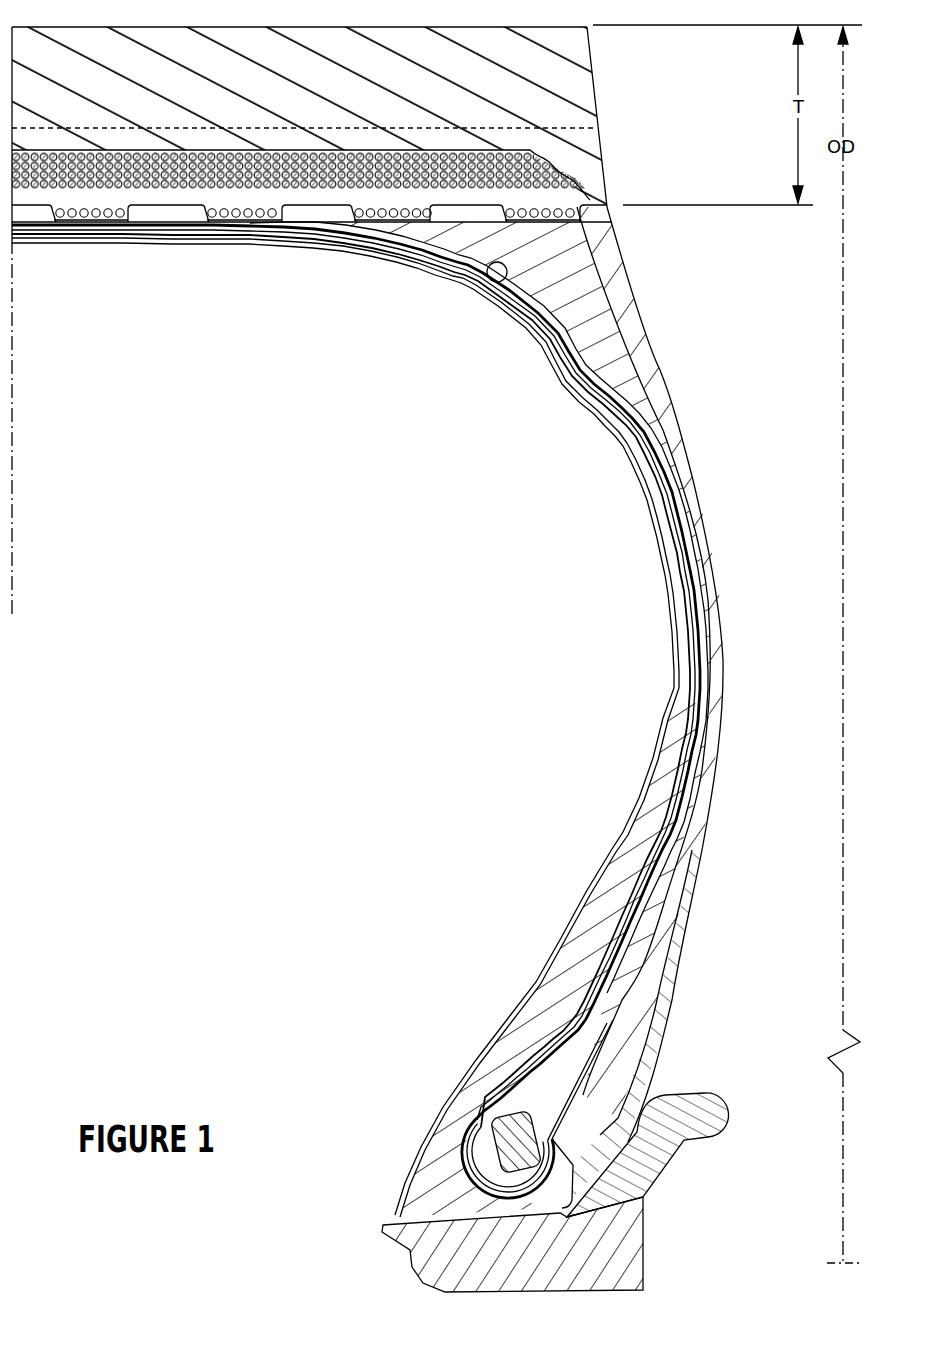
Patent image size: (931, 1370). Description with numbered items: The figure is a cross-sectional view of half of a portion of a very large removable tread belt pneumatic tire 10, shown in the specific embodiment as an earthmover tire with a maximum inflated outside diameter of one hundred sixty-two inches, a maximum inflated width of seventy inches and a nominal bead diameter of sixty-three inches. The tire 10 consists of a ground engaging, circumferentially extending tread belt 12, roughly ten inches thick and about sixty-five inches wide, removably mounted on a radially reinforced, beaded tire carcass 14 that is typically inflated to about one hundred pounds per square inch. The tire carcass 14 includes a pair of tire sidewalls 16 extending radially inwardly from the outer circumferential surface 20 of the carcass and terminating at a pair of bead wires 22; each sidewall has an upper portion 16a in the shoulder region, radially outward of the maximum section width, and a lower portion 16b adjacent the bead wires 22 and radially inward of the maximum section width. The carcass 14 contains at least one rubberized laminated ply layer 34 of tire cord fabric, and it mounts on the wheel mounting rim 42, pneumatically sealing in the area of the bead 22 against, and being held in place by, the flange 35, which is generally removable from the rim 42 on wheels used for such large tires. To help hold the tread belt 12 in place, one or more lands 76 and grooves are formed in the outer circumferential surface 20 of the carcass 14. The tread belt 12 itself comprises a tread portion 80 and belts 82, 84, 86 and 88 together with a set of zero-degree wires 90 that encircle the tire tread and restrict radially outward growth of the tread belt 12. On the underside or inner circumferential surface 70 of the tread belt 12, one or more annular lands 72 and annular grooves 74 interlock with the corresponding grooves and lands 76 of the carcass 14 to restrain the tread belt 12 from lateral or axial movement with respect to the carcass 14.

The tread belt pneumatic tire 10 is at (740, 625).
The tread belt 12 is at (636, 102).
The tire carcass 14 is at (697, 351).
The tire sidewalls 16 is at (682, 433).
The upper portion of sidewall 16a is at (630, 265).
The lower portion of sidewall 16b is at (673, 1003).
The outer circumferential surface 20 is at (305, 212).
The bead wires 22 is at (565, 1188).
The rubberized laminated ply layer 34 is at (489, 281).
The flange 35 is at (655, 1163).
The wheel mounting rim 42 is at (567, 1258).
The inner circumferential surface of the tread belt 70 is at (306, 222).
The annular lands 72 is at (520, 213).
The annular grooves 74 is at (467, 203).
The lands 76 is at (445, 217).
The tread portion 80 is at (135, 62).
The belt 82 is at (50, 157).
The belt 84 is at (60, 167).
The belt 86 is at (250, 173).
The belt 88 is at (217, 160).
The zero-degree wires 90 is at (83, 210).